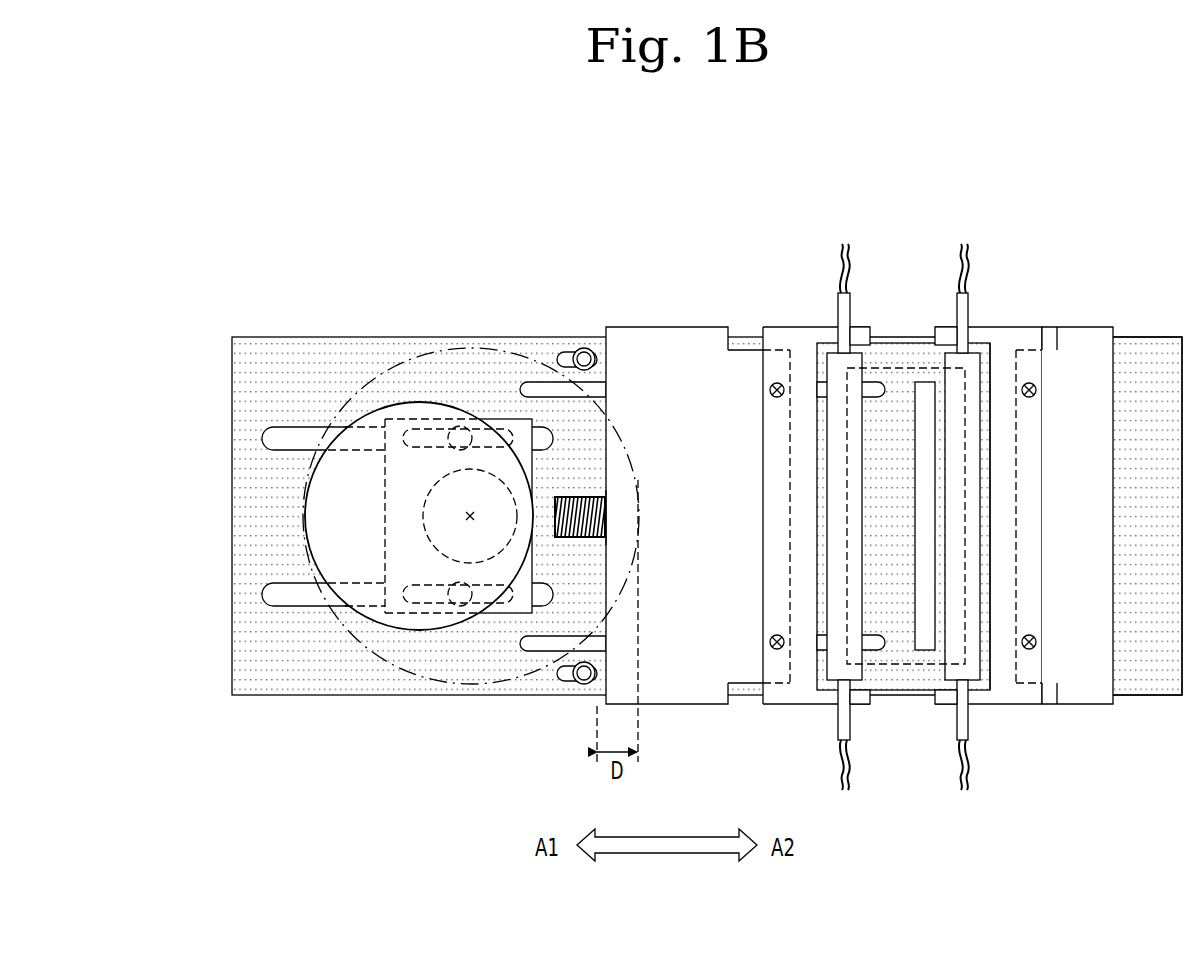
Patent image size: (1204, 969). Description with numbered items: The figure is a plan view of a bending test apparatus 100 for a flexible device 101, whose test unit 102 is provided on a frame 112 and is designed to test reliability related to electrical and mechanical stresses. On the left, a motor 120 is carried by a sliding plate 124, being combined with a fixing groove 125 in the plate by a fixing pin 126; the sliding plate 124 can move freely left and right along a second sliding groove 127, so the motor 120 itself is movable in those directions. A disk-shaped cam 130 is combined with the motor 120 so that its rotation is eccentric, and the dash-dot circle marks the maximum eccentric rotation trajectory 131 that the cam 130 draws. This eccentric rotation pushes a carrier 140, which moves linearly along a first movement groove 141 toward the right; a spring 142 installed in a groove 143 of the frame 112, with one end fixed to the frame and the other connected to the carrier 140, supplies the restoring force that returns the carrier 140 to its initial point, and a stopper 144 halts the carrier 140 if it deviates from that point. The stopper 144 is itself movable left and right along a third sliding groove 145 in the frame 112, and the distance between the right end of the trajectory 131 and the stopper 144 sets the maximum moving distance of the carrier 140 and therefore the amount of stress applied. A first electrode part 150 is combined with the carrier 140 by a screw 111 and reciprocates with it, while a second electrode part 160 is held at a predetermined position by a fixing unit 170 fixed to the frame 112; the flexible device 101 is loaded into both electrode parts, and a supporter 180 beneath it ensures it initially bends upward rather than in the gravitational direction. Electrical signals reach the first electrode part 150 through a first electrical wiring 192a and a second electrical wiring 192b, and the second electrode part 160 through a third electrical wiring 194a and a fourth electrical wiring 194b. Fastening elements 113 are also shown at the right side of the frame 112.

The bending test apparatus 100 is at (1167, 147).
The flexible device 101 is at (906, 664).
The test unit 102 is at (696, 239).
The screw 111 is at (776, 383).
The frame 112 is at (1145, 352).
The fastening screw 113 is at (1029, 383).
The motor 120 is at (443, 535).
The sliding plate 124 is at (397, 484).
The fixing groove 125 is at (410, 600).
The fixing pin 126 is at (462, 604).
The second sliding groove 127 is at (293, 598).
The cam 130 is at (400, 402).
The trajectory 131 is at (456, 348).
The carrier 140 is at (693, 705).
The first movement groove 141 is at (540, 651).
The spring 142 is at (600, 516).
The groove 143 is at (592, 496).
The stopper 144 is at (584, 348).
The third sliding groove 145 is at (565, 349).
The first electrode part 150 is at (806, 337).
The second electrode part 160 is at (995, 331).
The fixing unit 170 is at (1085, 705).
The supporter 180 is at (925, 390).
The first electrical wiring 192a is at (846, 243).
The second electrical wiring 192b is at (846, 792).
The third electrical wiring 194a is at (964, 243).
The fourth electrical wiring 194b is at (964, 792).